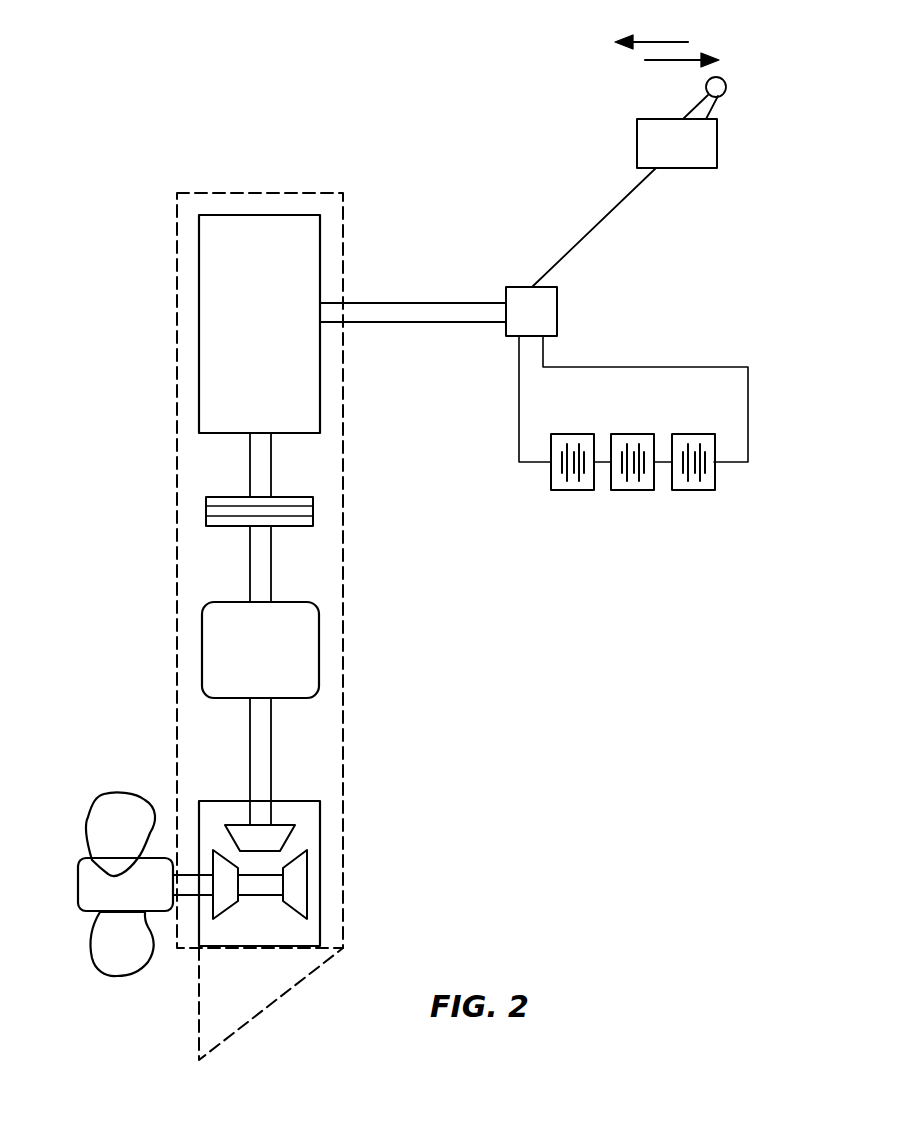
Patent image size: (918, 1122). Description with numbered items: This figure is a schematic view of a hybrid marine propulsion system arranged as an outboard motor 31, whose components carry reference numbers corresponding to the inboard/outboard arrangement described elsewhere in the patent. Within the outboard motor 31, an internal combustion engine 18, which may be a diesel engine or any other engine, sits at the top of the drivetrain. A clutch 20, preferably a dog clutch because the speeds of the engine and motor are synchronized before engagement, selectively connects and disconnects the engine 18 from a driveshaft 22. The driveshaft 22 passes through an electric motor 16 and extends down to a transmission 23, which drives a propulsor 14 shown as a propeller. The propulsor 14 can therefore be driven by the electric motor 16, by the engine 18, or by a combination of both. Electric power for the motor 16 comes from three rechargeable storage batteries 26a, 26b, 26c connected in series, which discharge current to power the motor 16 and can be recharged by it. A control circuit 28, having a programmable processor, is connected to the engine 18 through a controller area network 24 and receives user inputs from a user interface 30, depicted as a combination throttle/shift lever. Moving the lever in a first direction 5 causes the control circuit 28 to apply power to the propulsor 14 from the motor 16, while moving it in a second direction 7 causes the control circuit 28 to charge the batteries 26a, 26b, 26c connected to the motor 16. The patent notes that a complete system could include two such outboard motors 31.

The first direction 5 is at (660, 62).
The second direction 7 is at (663, 41).
The propulsor 14 is at (90, 887).
The electric motor 16 is at (202, 645).
The internal combustion engine 18 is at (199, 349).
The clutch 20 is at (206, 509).
The driveshaft 22 is at (272, 743).
The transmission 23 is at (300, 933).
The controller area network 24 is at (385, 295).
The rechargeable storage battery 26a is at (571, 490).
The rechargeable storage battery 26b is at (632, 490).
The rechargeable storage battery 26c is at (693, 490).
The control circuit 28 is at (557, 316).
The user interface 30 is at (718, 143).
The outboard motor 31 is at (343, 568).